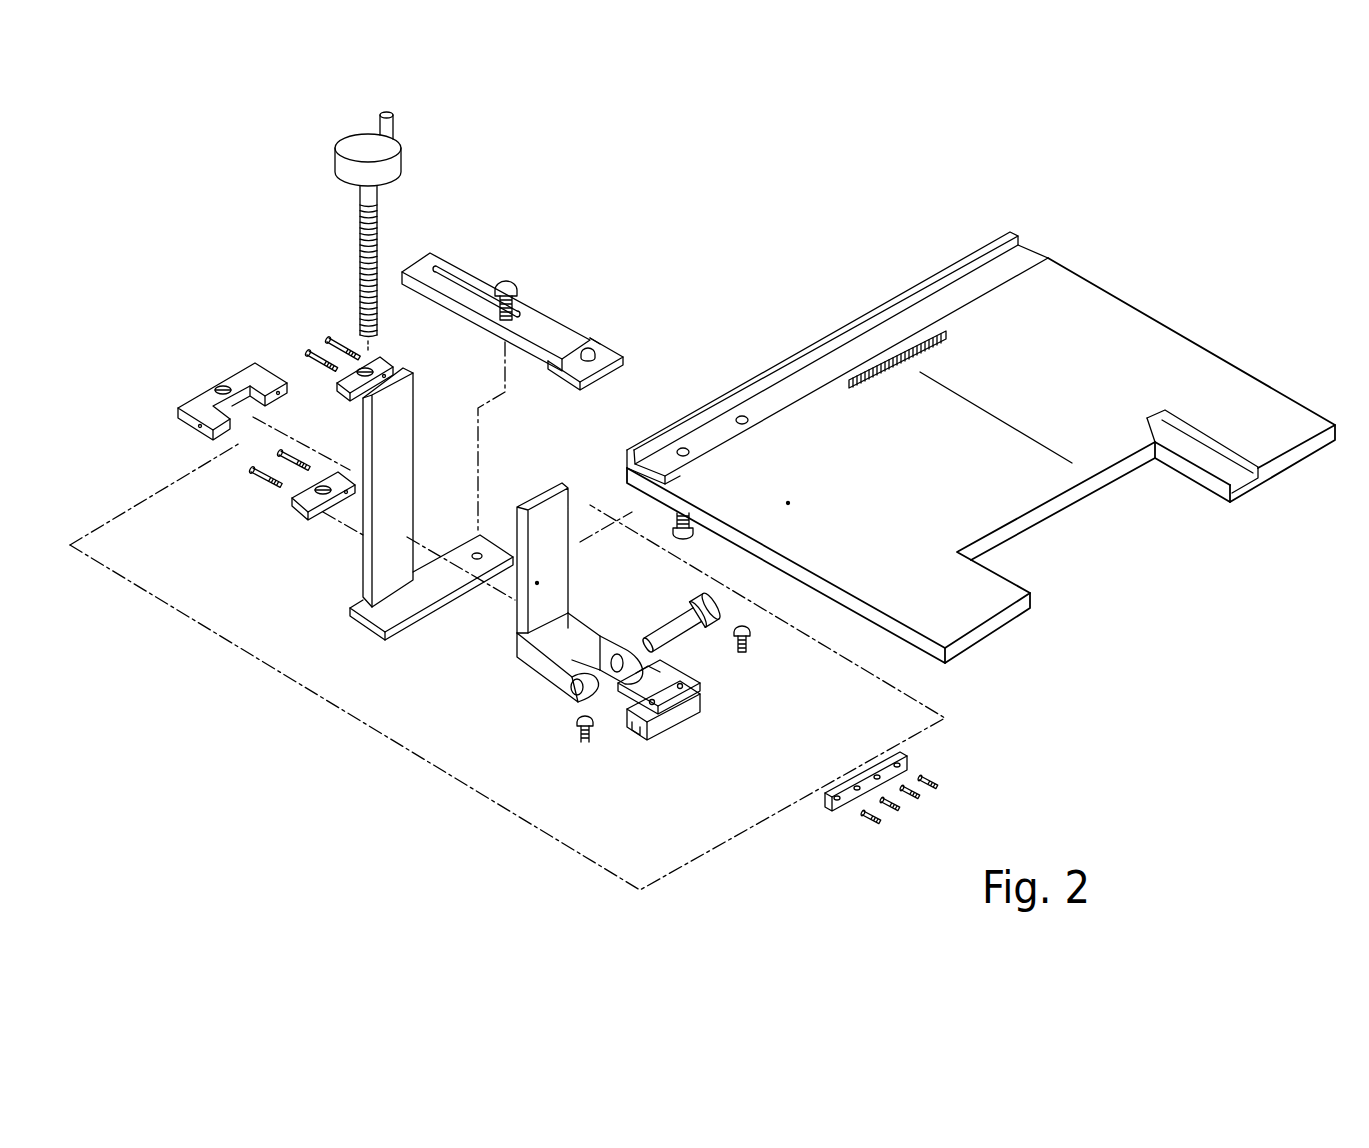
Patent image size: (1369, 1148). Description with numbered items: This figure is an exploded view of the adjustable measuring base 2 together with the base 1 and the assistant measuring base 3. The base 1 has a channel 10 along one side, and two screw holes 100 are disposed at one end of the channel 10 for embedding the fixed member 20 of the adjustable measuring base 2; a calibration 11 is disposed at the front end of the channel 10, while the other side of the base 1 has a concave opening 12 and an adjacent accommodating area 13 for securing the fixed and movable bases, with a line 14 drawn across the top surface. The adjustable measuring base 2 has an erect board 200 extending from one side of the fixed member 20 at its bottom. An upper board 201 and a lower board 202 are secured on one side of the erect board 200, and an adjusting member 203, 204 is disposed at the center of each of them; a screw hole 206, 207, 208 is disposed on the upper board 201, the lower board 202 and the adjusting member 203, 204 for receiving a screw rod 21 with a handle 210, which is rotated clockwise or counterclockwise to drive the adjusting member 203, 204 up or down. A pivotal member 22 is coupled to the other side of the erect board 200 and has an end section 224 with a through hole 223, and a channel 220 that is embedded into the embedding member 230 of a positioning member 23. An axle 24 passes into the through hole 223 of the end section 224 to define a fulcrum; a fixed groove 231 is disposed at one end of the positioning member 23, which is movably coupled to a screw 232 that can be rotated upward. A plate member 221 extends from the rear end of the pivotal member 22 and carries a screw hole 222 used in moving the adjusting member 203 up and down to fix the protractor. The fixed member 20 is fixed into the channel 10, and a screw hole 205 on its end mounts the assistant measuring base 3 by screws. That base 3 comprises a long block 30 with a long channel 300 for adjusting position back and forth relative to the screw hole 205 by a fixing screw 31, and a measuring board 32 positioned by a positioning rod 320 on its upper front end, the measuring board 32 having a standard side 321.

The base 1 is at (960, 597).
The channel 10 is at (777, 397).
The screw holes 100 is at (684, 448).
The calibration 11 is at (927, 340).
The concave opening 12 is at (1113, 520).
The accommodating area 13 is at (1235, 465).
The groove 14 is at (973, 404).
The adjustable measuring base 2 is at (300, 290).
The fixed member 20 is at (378, 613).
The erect board 200 is at (400, 423).
The upper board 201 is at (385, 362).
The lower board 202 is at (293, 502).
The adjusting member 203 is at (232, 367).
The adjusting member 204 is at (905, 753).
The screw hole 205 is at (475, 552).
The screw hole 206 is at (352, 390).
The screw hole 207 is at (315, 502).
The screw hole 208 is at (220, 390).
The screw rod 21 is at (360, 225).
The handle 210 is at (385, 133).
The pivotal member 22 is at (537, 662).
The channel 220 is at (570, 690).
The plate member 221 is at (548, 495).
The screw hole 222 is at (558, 570).
The through hole 223 is at (615, 657).
The end section 224 is at (637, 657).
The positioning member 23 is at (626, 735).
The embedding member 230 is at (698, 703).
The fixed groove 231 is at (662, 717).
The screw 232 is at (580, 733).
The axle 24 is at (732, 608).
The assistant measuring base 3 is at (560, 313).
The long block 30 is at (433, 260).
The long channel 300 is at (470, 292).
The fixing screw 31 is at (513, 283).
The measuring board 32 is at (622, 353).
The positioning rod 320 is at (597, 359).
The standard side 321 is at (595, 338).